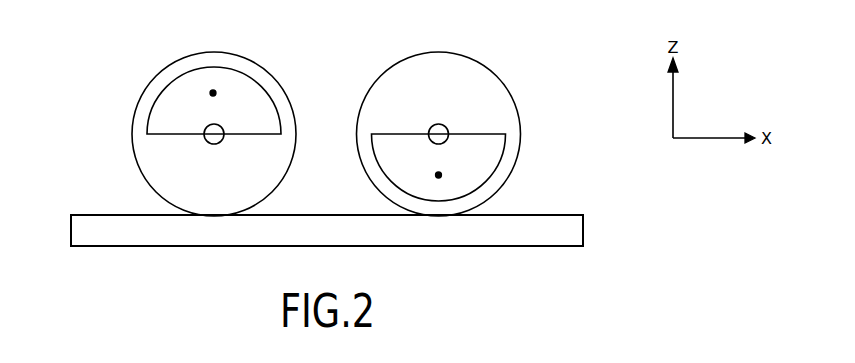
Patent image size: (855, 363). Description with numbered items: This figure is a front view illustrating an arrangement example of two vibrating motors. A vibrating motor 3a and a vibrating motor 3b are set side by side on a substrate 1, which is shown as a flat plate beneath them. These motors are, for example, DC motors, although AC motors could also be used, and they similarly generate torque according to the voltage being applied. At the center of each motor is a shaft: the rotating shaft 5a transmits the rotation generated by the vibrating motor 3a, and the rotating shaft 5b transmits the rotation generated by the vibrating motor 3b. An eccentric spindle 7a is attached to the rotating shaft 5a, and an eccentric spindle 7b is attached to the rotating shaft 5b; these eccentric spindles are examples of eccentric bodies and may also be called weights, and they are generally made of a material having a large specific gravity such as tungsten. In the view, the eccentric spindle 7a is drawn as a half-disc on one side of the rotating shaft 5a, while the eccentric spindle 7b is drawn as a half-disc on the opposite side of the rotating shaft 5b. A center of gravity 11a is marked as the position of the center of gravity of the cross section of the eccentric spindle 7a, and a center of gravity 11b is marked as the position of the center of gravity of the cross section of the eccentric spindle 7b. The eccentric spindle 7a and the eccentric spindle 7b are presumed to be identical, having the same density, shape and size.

The substrate 1 is at (585, 230).
The vibrating motor 3a is at (278, 82).
The vibrating motor 3b is at (503, 82).
The rotating shaft 5a is at (213, 146).
The rotating shaft 5b is at (438, 124).
The eccentric spindle 7a is at (148, 114).
The eccentric spindle 7b is at (503, 155).
The center of gravity 11a is at (213, 93).
The center of gravity 11b is at (438, 175).